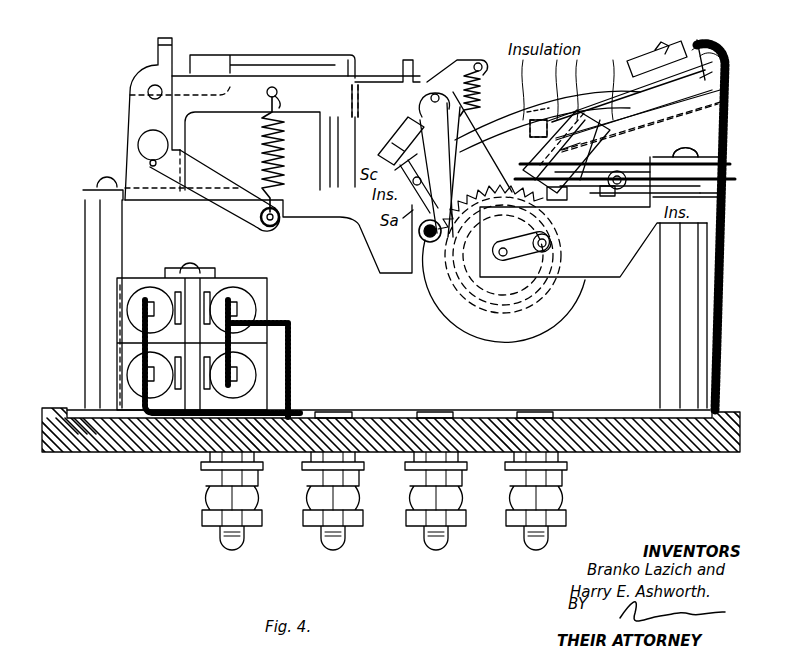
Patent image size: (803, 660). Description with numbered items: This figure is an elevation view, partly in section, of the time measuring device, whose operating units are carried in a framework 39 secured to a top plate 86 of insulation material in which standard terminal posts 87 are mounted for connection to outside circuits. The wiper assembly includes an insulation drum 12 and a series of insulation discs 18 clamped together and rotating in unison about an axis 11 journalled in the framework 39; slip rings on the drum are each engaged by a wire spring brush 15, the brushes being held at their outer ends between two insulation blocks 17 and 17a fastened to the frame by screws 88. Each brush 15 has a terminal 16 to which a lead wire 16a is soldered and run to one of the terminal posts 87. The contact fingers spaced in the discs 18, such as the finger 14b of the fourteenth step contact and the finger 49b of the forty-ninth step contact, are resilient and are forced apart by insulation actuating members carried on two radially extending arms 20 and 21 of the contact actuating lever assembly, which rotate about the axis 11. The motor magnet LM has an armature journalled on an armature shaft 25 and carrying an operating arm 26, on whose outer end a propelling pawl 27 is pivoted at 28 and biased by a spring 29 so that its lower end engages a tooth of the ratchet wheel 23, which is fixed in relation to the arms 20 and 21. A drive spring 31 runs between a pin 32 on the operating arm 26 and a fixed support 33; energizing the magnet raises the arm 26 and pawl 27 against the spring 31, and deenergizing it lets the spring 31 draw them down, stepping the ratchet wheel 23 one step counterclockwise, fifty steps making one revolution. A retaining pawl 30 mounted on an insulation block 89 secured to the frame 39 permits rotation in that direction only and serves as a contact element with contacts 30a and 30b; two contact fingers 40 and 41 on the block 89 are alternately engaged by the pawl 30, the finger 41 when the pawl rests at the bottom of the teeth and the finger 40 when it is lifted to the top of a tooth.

The axis 11 is at (502, 247).
The insulation drum 12 is at (460, 322).
The contact finger 14b is at (612, 197).
The wire spring brush 15 is at (638, 92).
The terminal 16 is at (698, 50).
The lead wire 16a is at (718, 82).
The insulation block 17 is at (705, 94).
The insulation block 17a is at (715, 108).
The insulation discs 18 is at (530, 312).
The radially extending arm 20 is at (396, 135).
The radially extending arm 21 is at (608, 133).
The ratchet wheel 23 is at (445, 266).
The armature shaft 25 is at (147, 93).
The operating arm 26 is at (244, 108).
The propelling pawl 27 is at (450, 163).
The pivot 28 is at (427, 100).
The spring 29 is at (482, 75).
The retaining pawl 30 is at (730, 180).
The contact 30a is at (558, 164).
The contact 30b is at (554, 198).
The drive spring 31 is at (283, 154).
The pin 32 is at (267, 95).
The fixed support 33 is at (250, 213).
The framework 39 is at (614, 274).
The contact finger 40 is at (718, 153).
The contact finger 41 is at (725, 212).
The contact finger 49b is at (528, 128).
The top plate 86 is at (156, 452).
The terminal posts 87 is at (318, 542).
The screws 88 is at (658, 60).
The insulation block 89 is at (720, 187).